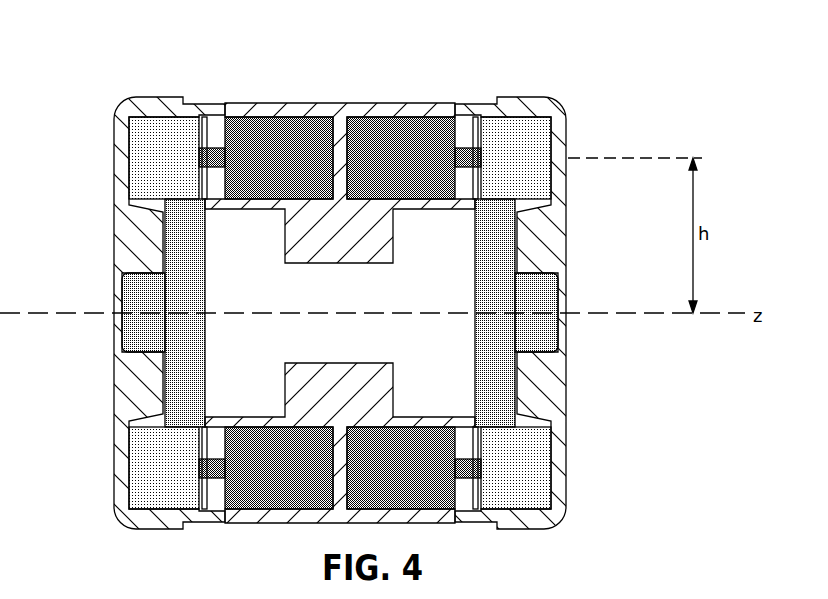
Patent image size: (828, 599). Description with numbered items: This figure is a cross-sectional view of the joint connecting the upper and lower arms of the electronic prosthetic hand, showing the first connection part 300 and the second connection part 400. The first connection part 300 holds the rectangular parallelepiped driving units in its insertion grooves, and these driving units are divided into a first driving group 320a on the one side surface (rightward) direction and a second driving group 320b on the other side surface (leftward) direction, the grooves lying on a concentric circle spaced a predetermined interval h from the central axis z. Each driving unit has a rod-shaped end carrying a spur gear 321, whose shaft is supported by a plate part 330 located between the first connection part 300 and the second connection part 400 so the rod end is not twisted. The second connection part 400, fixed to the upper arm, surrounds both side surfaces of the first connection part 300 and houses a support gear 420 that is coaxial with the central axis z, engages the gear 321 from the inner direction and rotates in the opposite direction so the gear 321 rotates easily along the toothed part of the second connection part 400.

The first connection part 300 is at (340, 127).
The first driving group 320a is at (442, 127).
The second driving group 320b is at (253, 127).
The gear 321 is at (168, 126).
The plate part 330 is at (214, 205).
The second connection part 400 is at (566, 124).
The support gear 420 is at (120, 338).